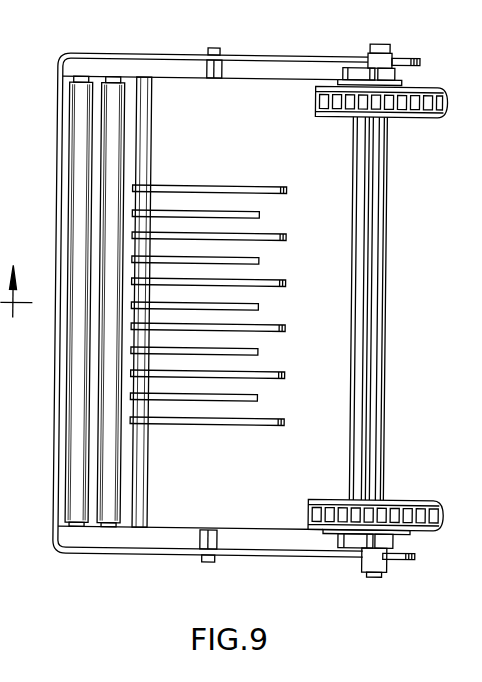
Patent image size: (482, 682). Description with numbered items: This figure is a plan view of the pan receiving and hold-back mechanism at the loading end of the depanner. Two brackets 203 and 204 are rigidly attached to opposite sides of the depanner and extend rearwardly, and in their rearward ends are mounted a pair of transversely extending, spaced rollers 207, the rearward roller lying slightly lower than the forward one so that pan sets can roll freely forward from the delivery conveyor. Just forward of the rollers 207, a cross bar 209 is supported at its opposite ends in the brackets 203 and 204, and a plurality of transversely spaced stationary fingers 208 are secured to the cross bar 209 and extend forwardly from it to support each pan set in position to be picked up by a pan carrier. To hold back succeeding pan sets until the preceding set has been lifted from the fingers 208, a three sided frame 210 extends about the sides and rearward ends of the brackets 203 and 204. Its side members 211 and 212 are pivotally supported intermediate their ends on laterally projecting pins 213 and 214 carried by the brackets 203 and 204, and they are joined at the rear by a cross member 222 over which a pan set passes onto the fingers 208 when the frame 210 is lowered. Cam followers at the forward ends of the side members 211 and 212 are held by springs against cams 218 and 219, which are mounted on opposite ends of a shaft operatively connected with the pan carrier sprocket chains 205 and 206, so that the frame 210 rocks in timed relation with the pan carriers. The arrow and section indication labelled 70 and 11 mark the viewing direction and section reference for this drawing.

The side member 212 is at (130, 52).
The cross member 222 is at (61, 362).
The side member 211 is at (265, 554).
The bracket 204 is at (265, 79).
The bracket 203 is at (245, 525).
The pin 214 is at (215, 70).
The pin 213 is at (213, 536).
The rollers 207 is at (81, 442).
The cross bar 209 is at (146, 151).
The stationary fingers 208 is at (287, 237).
The three sided frame 210 is at (387, 238).
The sprocket chain 206 is at (423, 107).
The sprocket chain 205 is at (422, 507).
The cam 219 is at (395, 50).
The cam 218 is at (415, 553).
The assembly 70 is at (11, 228).
The section line indicator 11 is at (20, 317).